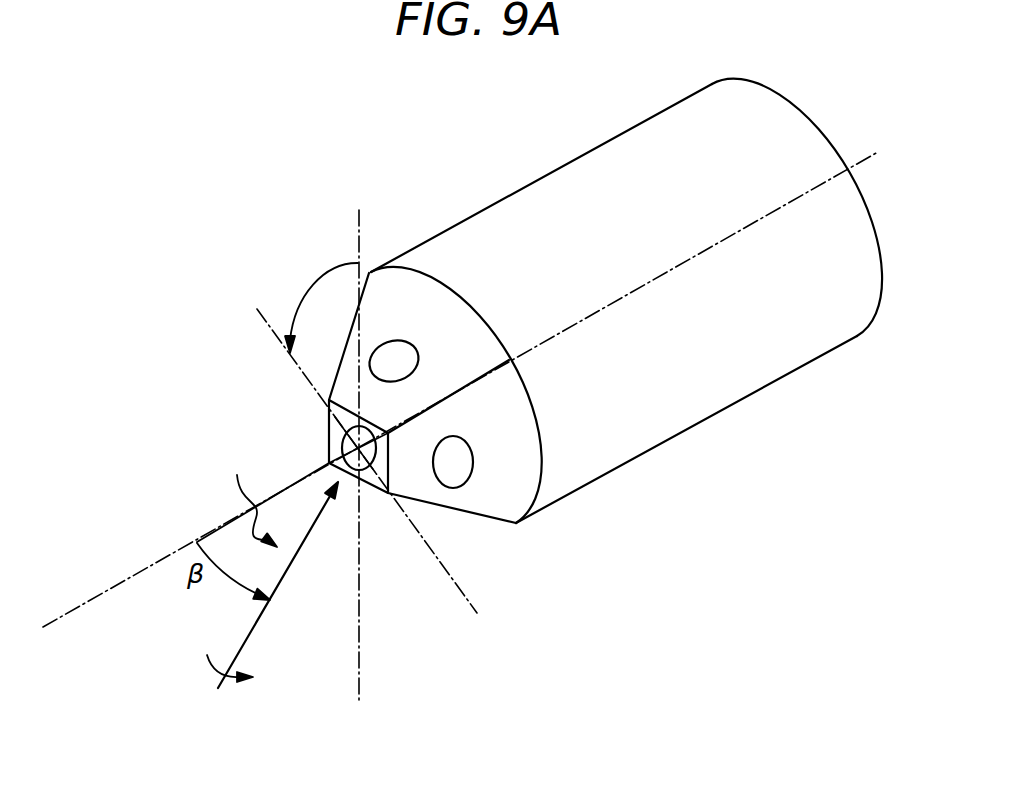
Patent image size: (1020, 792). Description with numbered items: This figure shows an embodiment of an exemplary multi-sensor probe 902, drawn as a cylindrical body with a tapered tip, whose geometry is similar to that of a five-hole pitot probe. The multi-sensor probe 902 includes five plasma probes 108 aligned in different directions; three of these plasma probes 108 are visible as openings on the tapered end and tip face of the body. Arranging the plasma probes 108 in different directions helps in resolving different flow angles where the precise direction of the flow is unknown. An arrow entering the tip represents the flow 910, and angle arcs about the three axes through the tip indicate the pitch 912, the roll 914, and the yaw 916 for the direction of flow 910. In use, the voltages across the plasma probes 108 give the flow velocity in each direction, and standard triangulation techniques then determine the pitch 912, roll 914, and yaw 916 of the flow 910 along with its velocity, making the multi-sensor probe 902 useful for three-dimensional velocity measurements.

The plasma probes 108 is at (375, 361).
The multi-sensor probe 902 is at (785, 333).
The flow 910 is at (250, 637).
The pitch 912 is at (202, 435).
The roll 914 is at (287, 232).
The yaw 916 is at (177, 660).